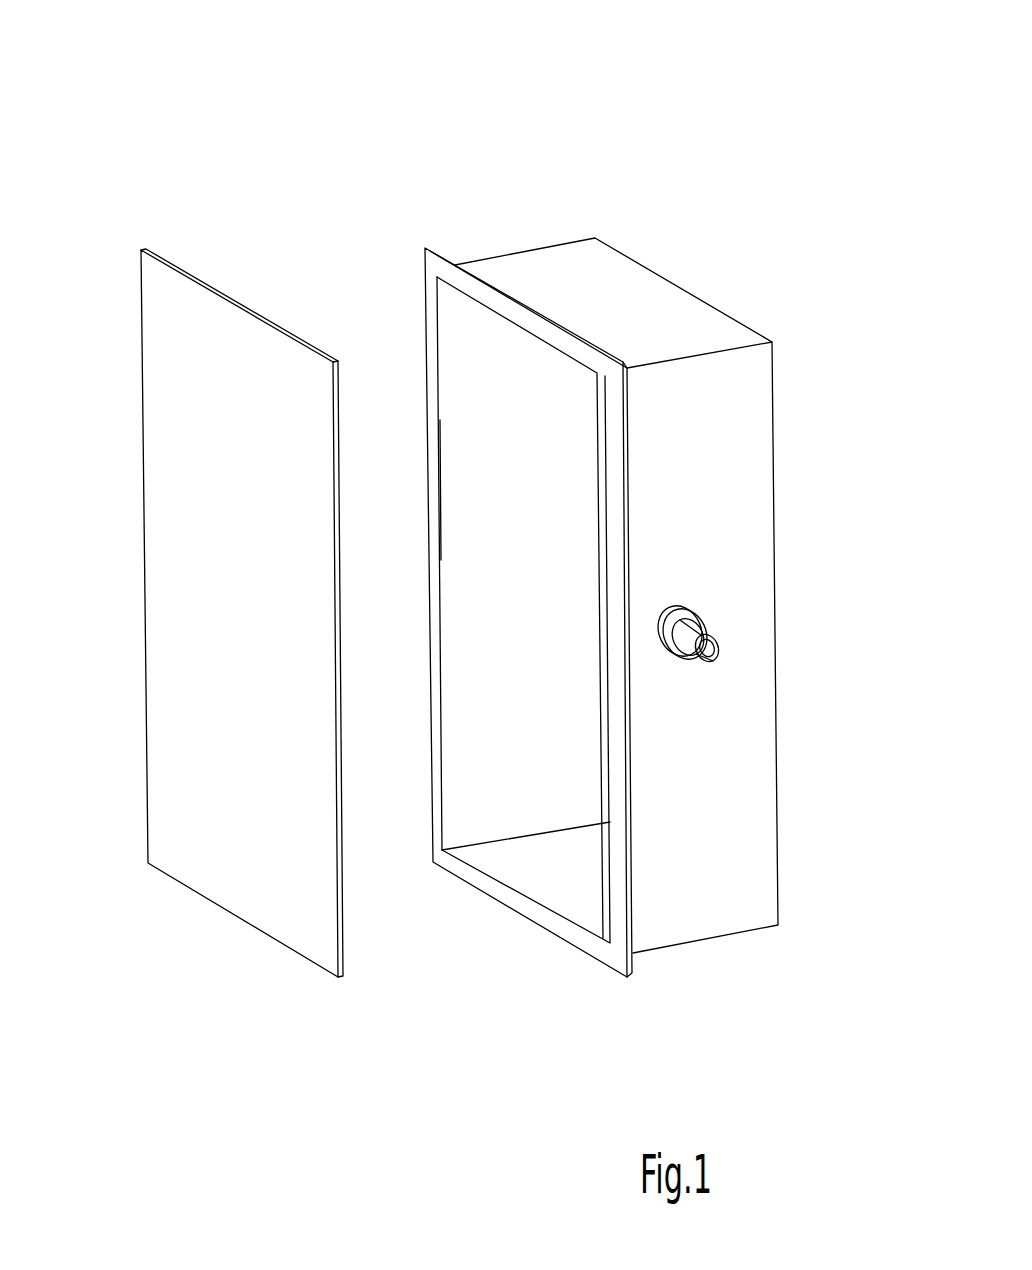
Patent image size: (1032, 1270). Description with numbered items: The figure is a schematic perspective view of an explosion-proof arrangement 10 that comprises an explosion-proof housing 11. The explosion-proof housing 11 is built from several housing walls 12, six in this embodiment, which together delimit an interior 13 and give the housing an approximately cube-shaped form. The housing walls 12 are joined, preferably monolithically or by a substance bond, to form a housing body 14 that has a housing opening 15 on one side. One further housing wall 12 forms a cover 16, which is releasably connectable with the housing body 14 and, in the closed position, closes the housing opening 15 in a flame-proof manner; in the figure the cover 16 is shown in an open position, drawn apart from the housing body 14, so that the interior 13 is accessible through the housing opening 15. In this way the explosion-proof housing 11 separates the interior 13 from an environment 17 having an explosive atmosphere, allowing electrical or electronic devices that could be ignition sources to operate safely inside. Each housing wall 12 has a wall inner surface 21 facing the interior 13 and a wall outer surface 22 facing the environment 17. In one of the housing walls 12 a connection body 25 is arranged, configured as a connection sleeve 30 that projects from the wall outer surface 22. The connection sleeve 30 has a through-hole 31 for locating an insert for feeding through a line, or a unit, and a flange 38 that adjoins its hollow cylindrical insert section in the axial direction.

The explosion-proof arrangement 10 is at (720, 172).
The explosion-proof housing 11 is at (364, 191).
The housing wall 12 is at (650, 288).
The interior 13 is at (526, 607).
The housing body 14 is at (545, 228).
The housing opening 15 is at (442, 490).
The cover 16 is at (257, 912).
The environment 17 is at (848, 827).
The wall inner surface 21 is at (240, 299).
The wall outer surface 22 is at (710, 340).
The connection body 25 is at (717, 607).
The connection sleeve 30 is at (691, 615).
The through-hole 31 is at (712, 650).
The flange 38 is at (676, 610).